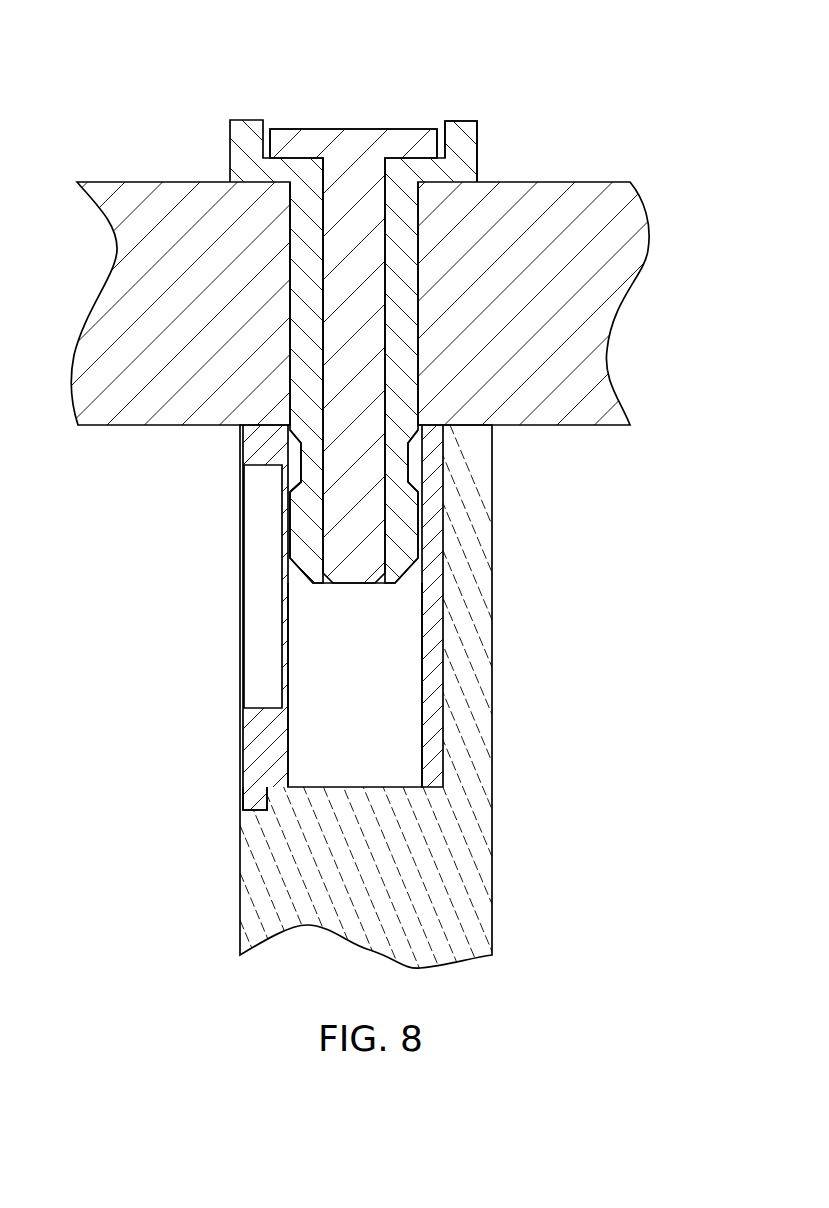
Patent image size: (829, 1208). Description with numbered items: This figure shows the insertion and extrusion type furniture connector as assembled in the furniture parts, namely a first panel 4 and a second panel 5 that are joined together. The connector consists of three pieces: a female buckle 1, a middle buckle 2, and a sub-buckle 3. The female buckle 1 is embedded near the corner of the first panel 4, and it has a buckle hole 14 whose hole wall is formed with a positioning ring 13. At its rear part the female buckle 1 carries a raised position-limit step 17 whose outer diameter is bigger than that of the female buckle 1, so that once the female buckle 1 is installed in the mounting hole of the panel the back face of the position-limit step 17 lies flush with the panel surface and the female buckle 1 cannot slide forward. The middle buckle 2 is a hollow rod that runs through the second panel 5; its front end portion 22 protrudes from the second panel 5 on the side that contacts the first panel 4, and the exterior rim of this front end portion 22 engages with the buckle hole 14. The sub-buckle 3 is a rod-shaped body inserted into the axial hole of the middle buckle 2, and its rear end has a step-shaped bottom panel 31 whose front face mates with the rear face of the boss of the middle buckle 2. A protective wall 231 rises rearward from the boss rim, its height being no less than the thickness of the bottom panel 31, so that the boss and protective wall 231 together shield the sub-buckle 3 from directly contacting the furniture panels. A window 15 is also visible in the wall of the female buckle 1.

The female buckle 1 is at (257, 739).
The middle buckle 2 is at (298, 260).
The sub-buckle 3 is at (350, 210).
The first panel 4 is at (277, 843).
The second panel 5 is at (160, 242).
The positioning ring 13 is at (282, 485).
The buckle hole 14 is at (370, 668).
The window opening 15 is at (258, 638).
The position-limit step 17 is at (245, 798).
The front end portion 22 is at (408, 518).
The bottom panel 31 is at (428, 140).
The protective wall 231 is at (467, 147).